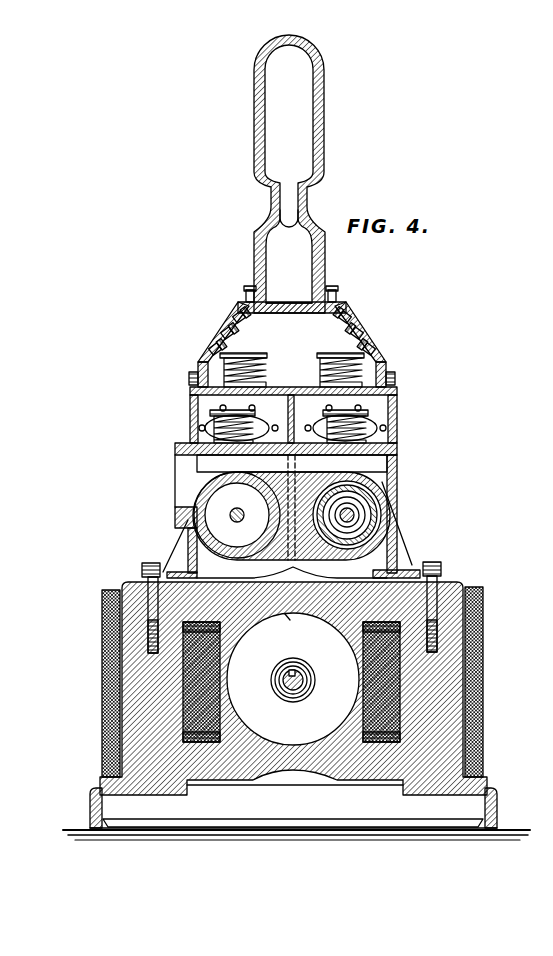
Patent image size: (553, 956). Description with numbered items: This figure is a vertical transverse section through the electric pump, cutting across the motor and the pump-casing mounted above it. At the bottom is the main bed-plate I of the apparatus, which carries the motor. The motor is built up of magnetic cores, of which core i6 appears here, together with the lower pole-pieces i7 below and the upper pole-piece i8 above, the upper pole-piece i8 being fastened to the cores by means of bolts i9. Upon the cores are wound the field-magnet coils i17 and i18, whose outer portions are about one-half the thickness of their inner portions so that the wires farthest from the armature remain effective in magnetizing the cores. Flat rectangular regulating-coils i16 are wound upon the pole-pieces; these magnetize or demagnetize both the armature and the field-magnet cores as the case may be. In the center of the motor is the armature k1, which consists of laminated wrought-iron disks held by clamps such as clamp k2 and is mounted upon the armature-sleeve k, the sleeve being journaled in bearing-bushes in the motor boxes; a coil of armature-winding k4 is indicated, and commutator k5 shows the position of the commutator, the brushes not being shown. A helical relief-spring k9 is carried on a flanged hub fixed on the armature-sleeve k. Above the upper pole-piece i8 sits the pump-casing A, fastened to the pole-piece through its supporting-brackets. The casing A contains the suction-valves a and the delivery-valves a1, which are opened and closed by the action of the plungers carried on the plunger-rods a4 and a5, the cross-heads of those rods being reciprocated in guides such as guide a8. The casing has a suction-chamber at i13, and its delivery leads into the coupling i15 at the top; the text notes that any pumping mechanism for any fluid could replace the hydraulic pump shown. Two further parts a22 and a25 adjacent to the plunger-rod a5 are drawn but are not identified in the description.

The pump-casing A is at (272, 340).
The bed-plate I is at (296, 814).
The coupling i15 is at (272, 245).
The suction-chamber i13 is at (286, 484).
The delivery-valve a1 is at (267, 385).
The suction-valve a is at (292, 425).
The plunger-rod a4 is at (235, 514).
The guide a8 is at (188, 535).
The plunger-rod a5 is at (385, 507).
The roller shaft a22 is at (352, 513).
The roller bearing a25 is at (390, 522).
The upper pole-piece i8 is at (373, 576).
The bolt i9 is at (142, 574).
The magnetic core i6 is at (143, 703).
The lower pole-piece i7 is at (470, 750).
The regulating-coil i16 is at (130, 672).
The field-magnet coil i17 is at (143, 690).
The field-magnet coil i18 is at (186, 735).
The armature k1 is at (293, 679).
The clamp k2 is at (272, 632).
The armature-sleeve k is at (306, 667).
The helical relief-spring k9 is at (294, 672).
The coil of armature-winding k4 is at (311, 680).
The commutator k5 is at (310, 687).